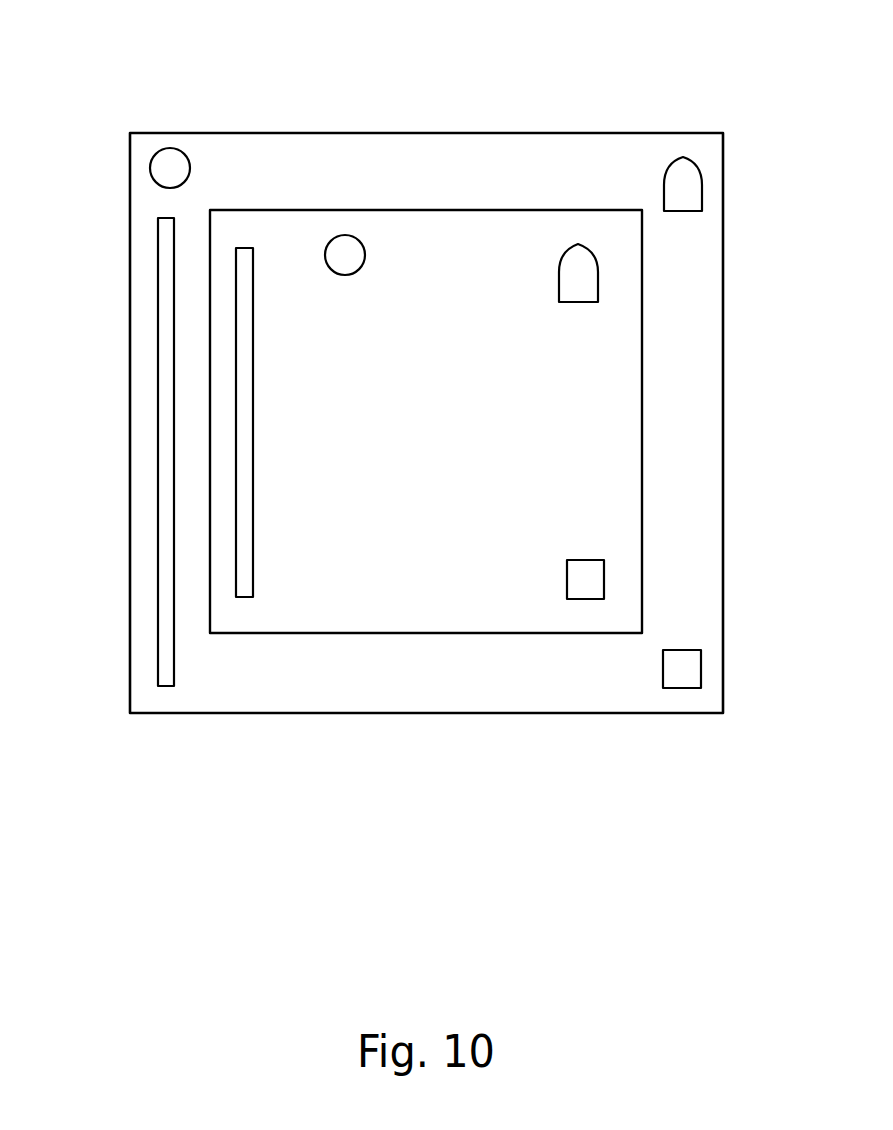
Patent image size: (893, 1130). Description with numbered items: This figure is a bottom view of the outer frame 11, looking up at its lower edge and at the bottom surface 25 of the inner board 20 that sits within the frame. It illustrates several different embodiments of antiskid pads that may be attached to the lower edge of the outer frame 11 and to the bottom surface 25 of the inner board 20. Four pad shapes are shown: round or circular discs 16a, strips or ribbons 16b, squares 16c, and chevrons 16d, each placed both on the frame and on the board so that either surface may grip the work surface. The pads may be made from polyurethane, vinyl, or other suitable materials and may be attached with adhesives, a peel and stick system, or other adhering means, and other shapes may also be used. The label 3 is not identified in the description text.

The substrate 3 is at (426, 370).
The outer frame 11 is at (326, 132).
The inner board 20 is at (502, 421).
The bottom surface 25 is at (455, 416).
The round or circular discs 16a is at (169, 148).
The strips or ribbons 16b is at (157, 348).
The squares 16c is at (585, 559).
The chevrons 16d is at (698, 167).